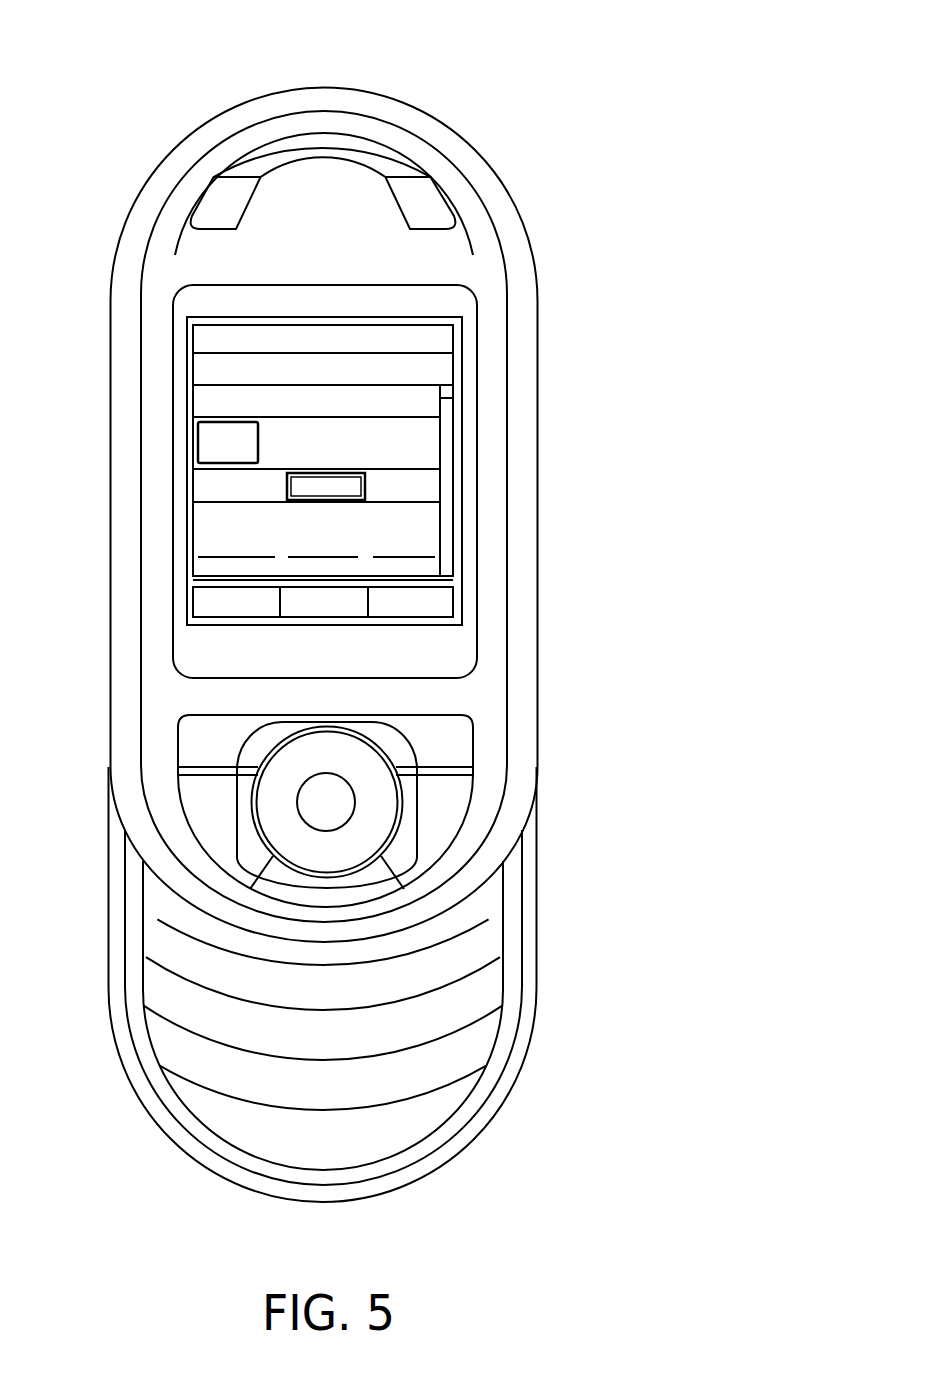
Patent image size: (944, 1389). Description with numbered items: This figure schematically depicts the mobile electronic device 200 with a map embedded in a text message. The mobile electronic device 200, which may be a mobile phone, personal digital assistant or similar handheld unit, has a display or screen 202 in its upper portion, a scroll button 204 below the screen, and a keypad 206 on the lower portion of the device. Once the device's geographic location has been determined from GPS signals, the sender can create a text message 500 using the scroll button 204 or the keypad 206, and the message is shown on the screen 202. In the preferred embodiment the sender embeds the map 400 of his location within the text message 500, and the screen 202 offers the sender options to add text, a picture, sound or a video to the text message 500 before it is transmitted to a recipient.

The mobile electronic device 200 is at (669, 63).
The display or screen 202 is at (422, 297).
The scroll button 204 is at (348, 769).
The keypad 206 is at (359, 1096).
The map 400 is at (197, 447).
The text message 500 is at (443, 368).